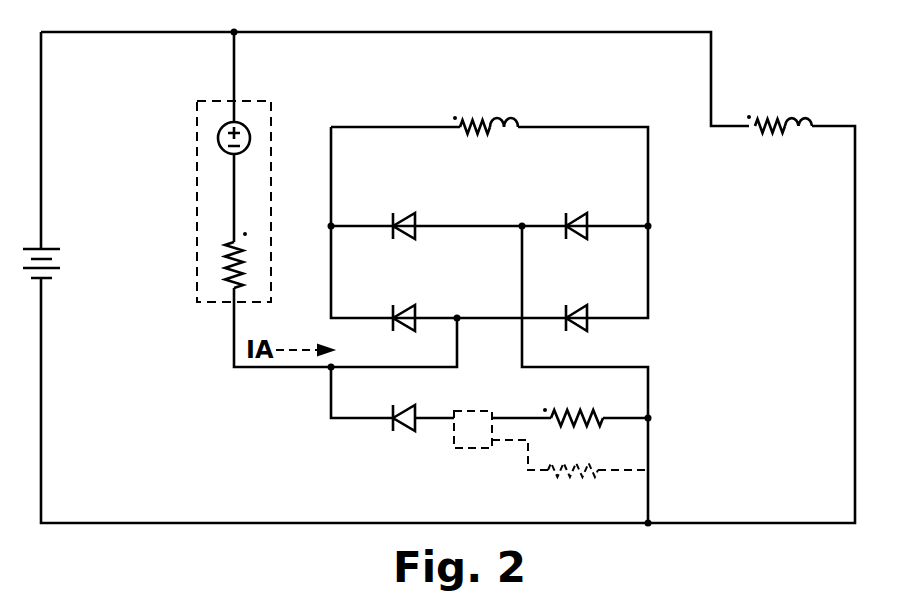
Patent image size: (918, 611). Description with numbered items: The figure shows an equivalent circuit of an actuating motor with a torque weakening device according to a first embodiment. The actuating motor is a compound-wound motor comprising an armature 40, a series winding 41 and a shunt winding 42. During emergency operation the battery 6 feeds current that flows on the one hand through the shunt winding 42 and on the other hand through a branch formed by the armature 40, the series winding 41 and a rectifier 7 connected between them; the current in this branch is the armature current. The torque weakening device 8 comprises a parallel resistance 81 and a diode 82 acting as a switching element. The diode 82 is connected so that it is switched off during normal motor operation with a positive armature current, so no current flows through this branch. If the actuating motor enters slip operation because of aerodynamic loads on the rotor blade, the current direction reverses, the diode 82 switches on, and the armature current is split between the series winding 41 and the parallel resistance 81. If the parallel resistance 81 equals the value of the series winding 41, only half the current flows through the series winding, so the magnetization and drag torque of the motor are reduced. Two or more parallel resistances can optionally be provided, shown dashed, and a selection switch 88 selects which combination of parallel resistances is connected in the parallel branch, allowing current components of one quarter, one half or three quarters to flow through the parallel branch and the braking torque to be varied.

The battery 6 is at (55, 260).
The rectifier 7 is at (665, 295).
The torque weakening device 8 is at (532, 428).
The armature 40 is at (197, 152).
The series winding 41 is at (490, 120).
The shunt winding 42 is at (795, 128).
The parallel resistance 81 is at (573, 412).
The diode 82 is at (400, 432).
The selection switch 88 is at (472, 452).